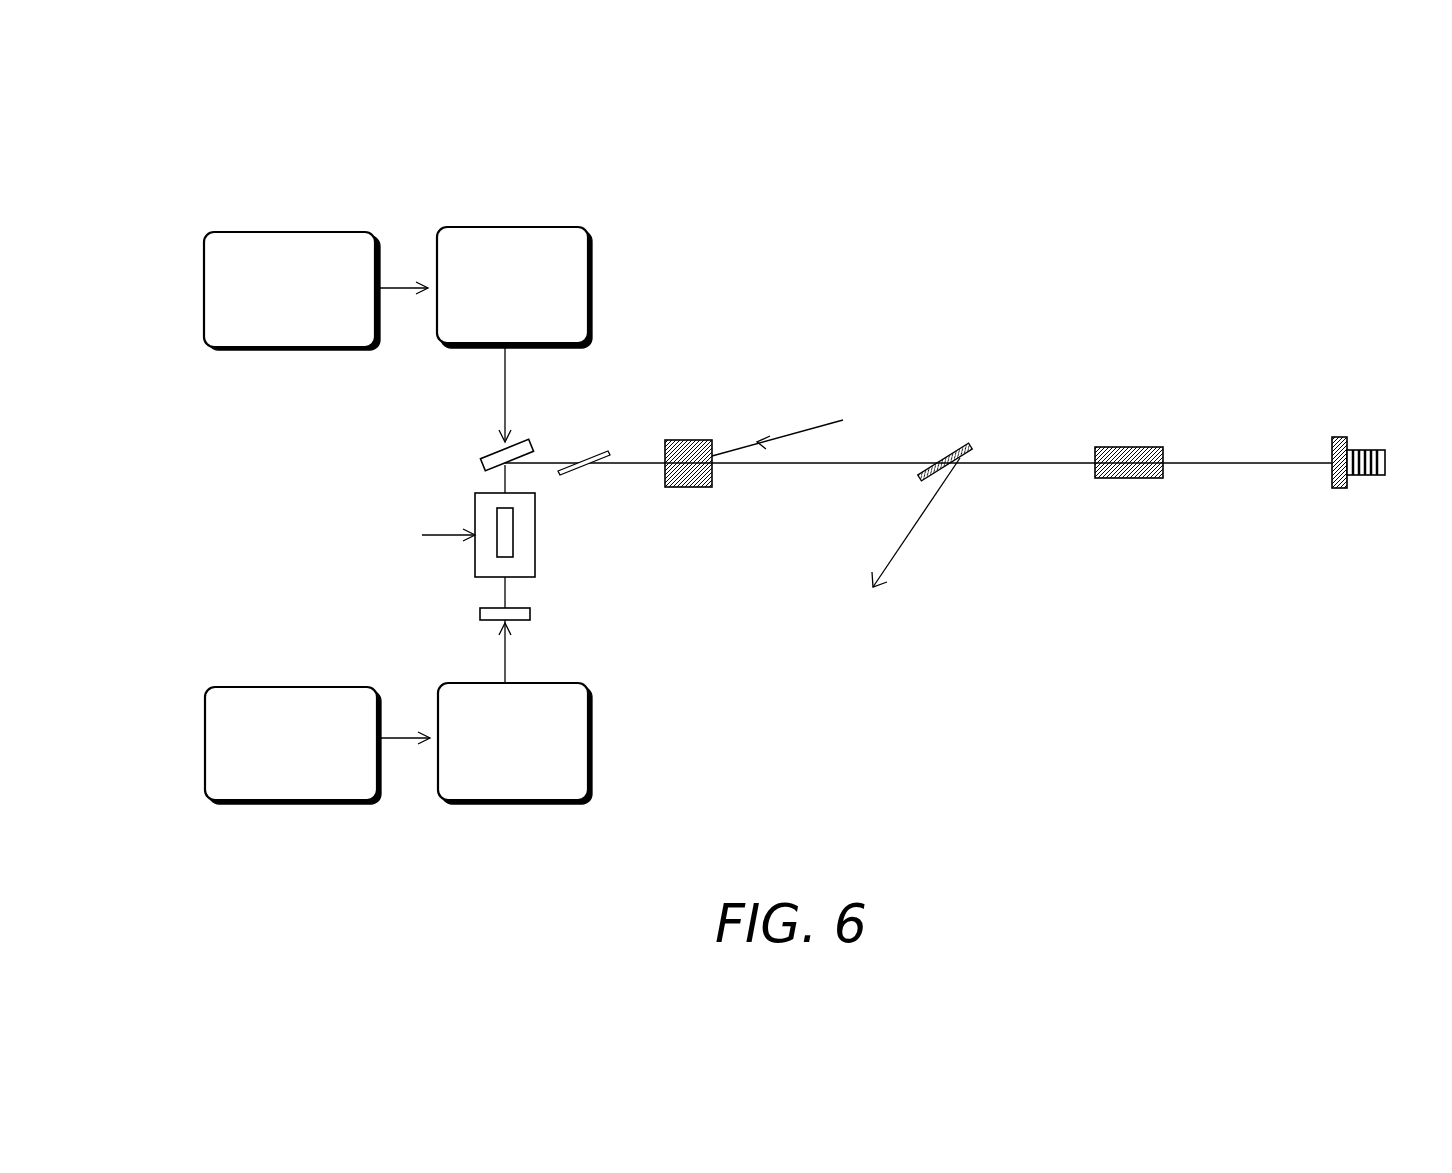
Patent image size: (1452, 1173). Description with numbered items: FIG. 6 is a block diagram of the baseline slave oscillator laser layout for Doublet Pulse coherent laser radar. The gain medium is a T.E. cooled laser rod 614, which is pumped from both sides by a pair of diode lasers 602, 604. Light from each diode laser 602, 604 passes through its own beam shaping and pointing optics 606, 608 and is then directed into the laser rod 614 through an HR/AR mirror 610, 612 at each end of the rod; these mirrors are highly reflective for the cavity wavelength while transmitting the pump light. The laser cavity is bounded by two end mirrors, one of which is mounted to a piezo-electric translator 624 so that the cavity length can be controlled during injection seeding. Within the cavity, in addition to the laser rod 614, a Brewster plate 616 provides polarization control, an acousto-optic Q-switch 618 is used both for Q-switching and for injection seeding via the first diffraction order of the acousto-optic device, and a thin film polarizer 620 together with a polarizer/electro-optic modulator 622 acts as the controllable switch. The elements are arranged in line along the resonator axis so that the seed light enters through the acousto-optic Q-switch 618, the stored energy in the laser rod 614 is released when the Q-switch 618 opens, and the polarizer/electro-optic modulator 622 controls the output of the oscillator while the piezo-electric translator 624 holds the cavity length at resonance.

The diode laser 602 is at (282, 350).
The diode laser 604 is at (335, 805).
The beam shaping and pointing optics 606 is at (548, 227).
The beam shaping and pointing optics 608 is at (592, 750).
The HR/AR mirror 610 is at (481, 450).
The HR/AR mirror 612 is at (530, 615).
The T.E. cooled laser rod 614 is at (535, 558).
The Brewster plate 616 is at (572, 473).
The acousto-optic Q-switch 618 is at (712, 475).
The thin film polarizer 620 is at (920, 480).
The polarizer/electro-optic modulator 622 is at (1140, 478).
The piezo-electric translator 624 is at (1370, 450).